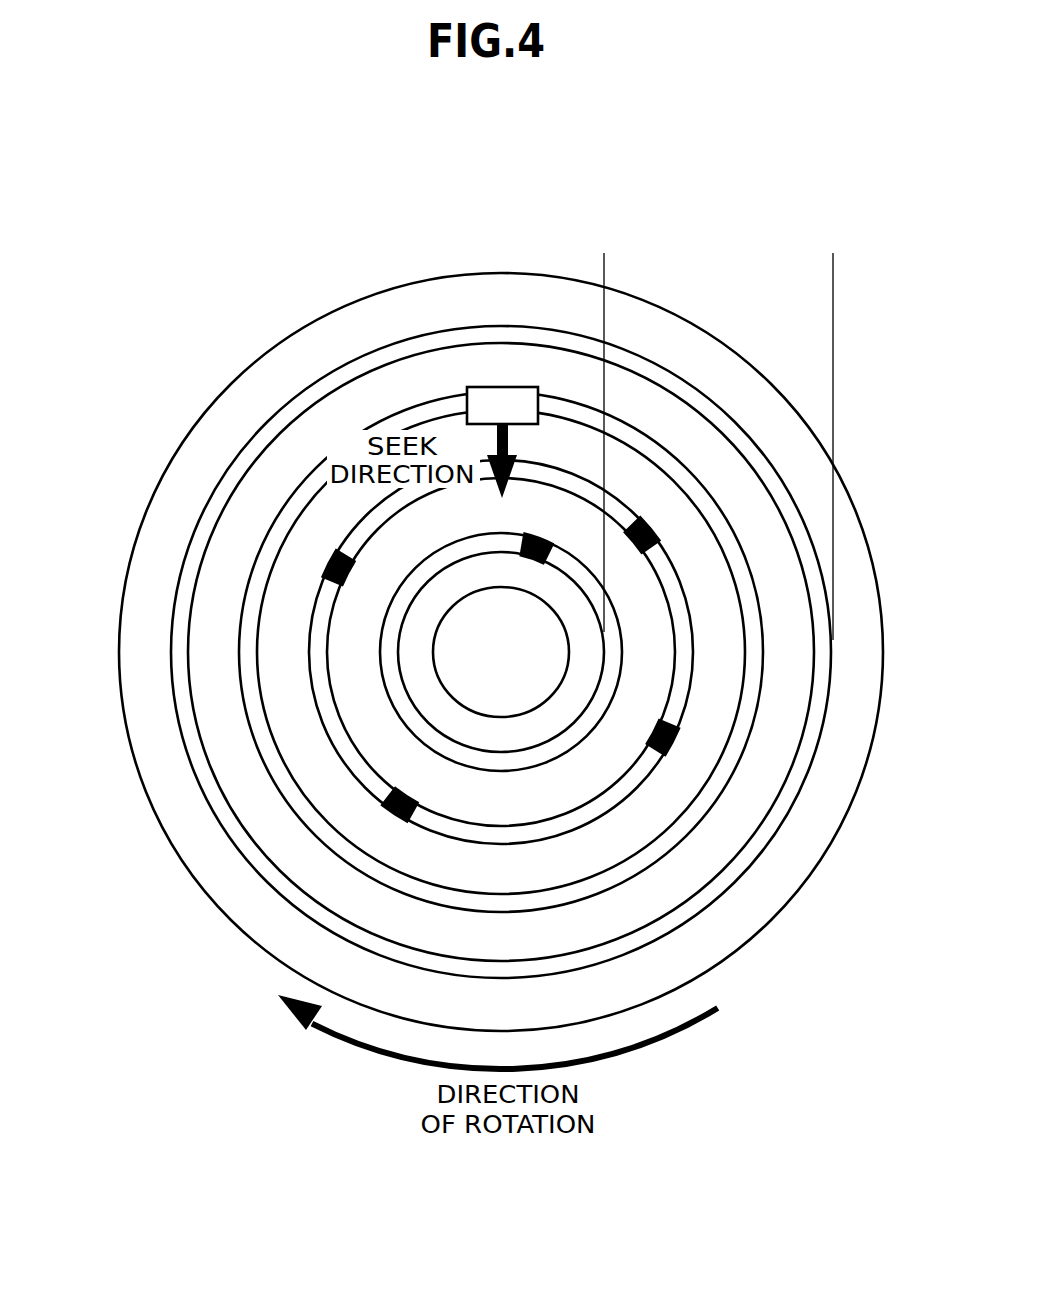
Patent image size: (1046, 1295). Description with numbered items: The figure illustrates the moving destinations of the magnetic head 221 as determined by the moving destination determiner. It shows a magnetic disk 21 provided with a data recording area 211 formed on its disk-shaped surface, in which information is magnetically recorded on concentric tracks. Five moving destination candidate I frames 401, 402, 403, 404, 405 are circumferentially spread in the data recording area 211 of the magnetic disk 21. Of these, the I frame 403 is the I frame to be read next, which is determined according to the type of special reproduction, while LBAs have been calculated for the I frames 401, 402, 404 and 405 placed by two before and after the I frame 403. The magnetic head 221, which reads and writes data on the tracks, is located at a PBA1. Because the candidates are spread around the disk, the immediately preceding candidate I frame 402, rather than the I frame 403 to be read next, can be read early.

The magnetic disk 21 is at (213, 405).
The data recording area 211 is at (833, 240).
The magnetic head 221 is at (467, 387).
The I frame 401 is at (332, 562).
The I frame 402 is at (395, 815).
The I frame 403 is at (670, 745).
The I frame 404 is at (645, 528).
The I frame 405 is at (538, 534).